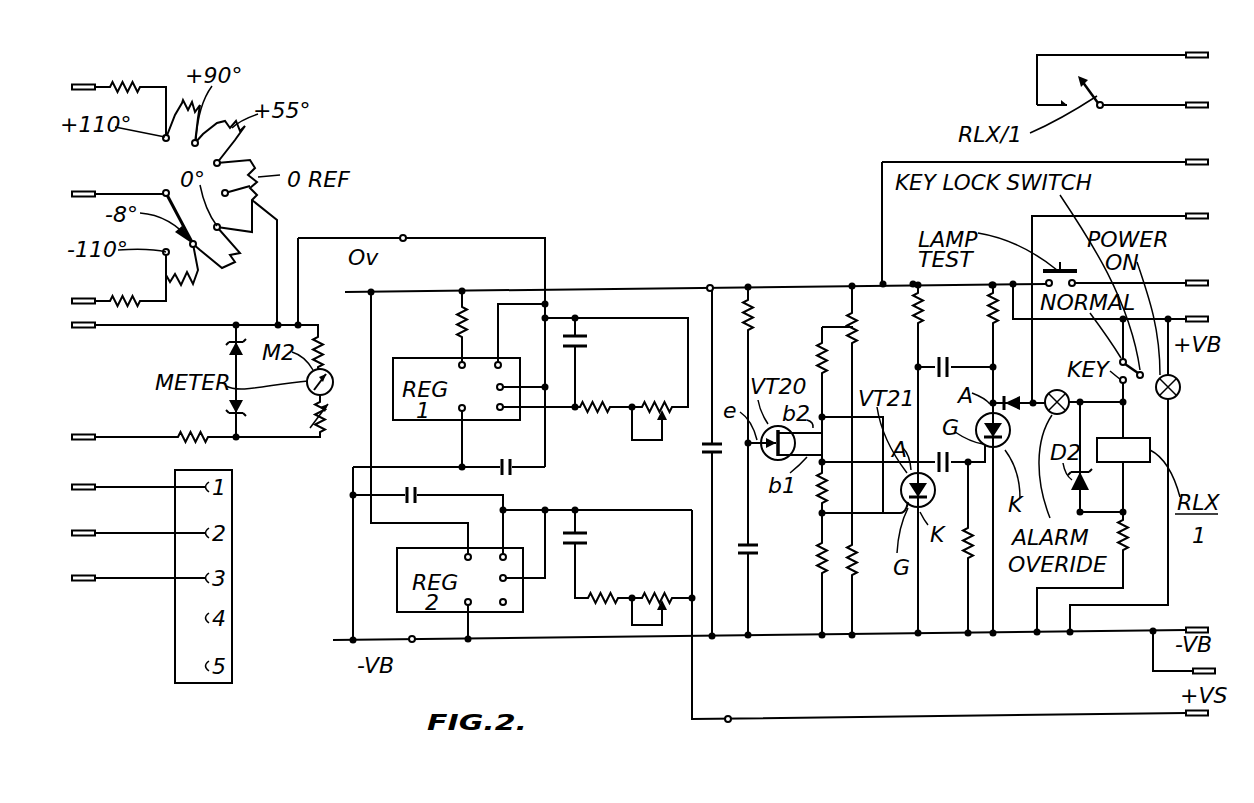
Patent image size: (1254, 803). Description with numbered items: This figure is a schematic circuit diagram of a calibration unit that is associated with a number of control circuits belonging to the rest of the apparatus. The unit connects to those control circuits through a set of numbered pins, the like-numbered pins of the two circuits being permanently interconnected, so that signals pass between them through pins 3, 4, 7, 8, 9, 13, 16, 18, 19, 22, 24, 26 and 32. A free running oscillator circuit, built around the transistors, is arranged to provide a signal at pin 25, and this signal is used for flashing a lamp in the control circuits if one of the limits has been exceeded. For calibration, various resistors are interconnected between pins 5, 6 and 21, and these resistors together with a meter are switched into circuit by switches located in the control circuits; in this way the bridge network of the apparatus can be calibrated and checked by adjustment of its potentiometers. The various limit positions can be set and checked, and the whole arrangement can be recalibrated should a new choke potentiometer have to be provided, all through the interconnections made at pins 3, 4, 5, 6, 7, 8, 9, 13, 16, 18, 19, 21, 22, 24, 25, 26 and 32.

The pin 3 is at (83, 486).
The pin 4 is at (82, 532).
The pin 5 is at (84, 84).
The pin 6 is at (82, 299).
The pin 7 is at (1190, 712).
The pin 8 is at (1191, 102).
The pin 9 is at (1190, 157).
The pin 13 is at (1195, 670).
The pin 16 is at (1200, 304).
The pin 18 is at (83, 331).
The pin 19 is at (80, 578).
The pin 21 is at (79, 191).
The pin 22 is at (81, 436).
The pin 24 is at (1185, 53).
The pin 25 is at (1197, 196).
The pin 26 is at (1197, 261).
The pin 32 is at (1199, 625).